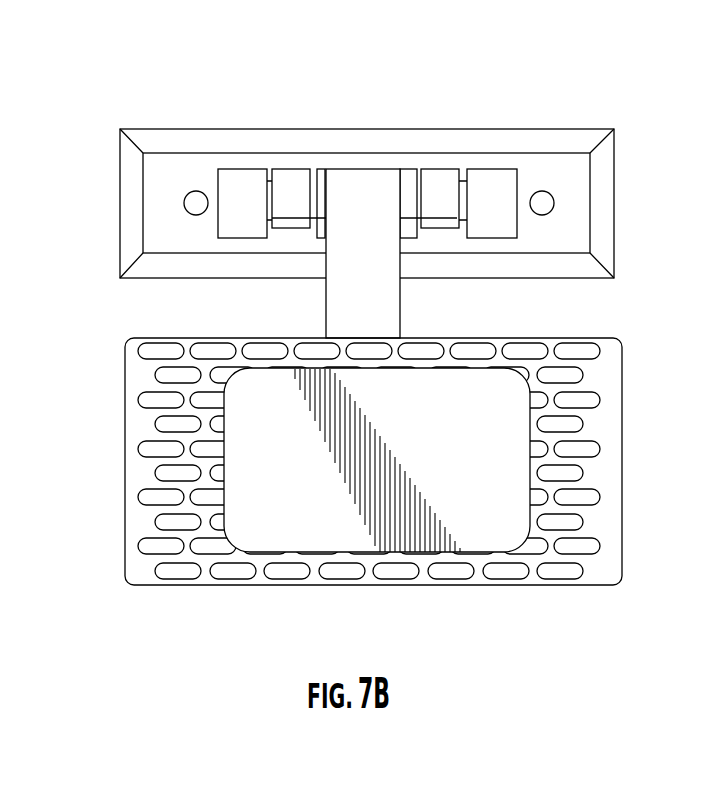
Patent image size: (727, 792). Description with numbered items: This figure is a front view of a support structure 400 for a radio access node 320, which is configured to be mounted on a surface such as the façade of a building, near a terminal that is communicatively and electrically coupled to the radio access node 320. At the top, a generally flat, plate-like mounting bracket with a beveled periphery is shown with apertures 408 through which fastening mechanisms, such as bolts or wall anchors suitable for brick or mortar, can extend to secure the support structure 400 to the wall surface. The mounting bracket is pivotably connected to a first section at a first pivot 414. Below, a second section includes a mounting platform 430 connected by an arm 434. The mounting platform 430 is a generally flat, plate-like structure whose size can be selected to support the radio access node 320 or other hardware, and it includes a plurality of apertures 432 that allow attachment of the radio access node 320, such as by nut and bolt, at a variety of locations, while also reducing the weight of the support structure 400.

The support structure 400 is at (325, 74).
The apertures 408 is at (196, 201).
The first pivot 414 is at (445, 187).
The arm 434 is at (393, 316).
The mounting platform 430 is at (337, 461).
The apertures 432 is at (165, 523).
The radio access node 320 is at (262, 540).